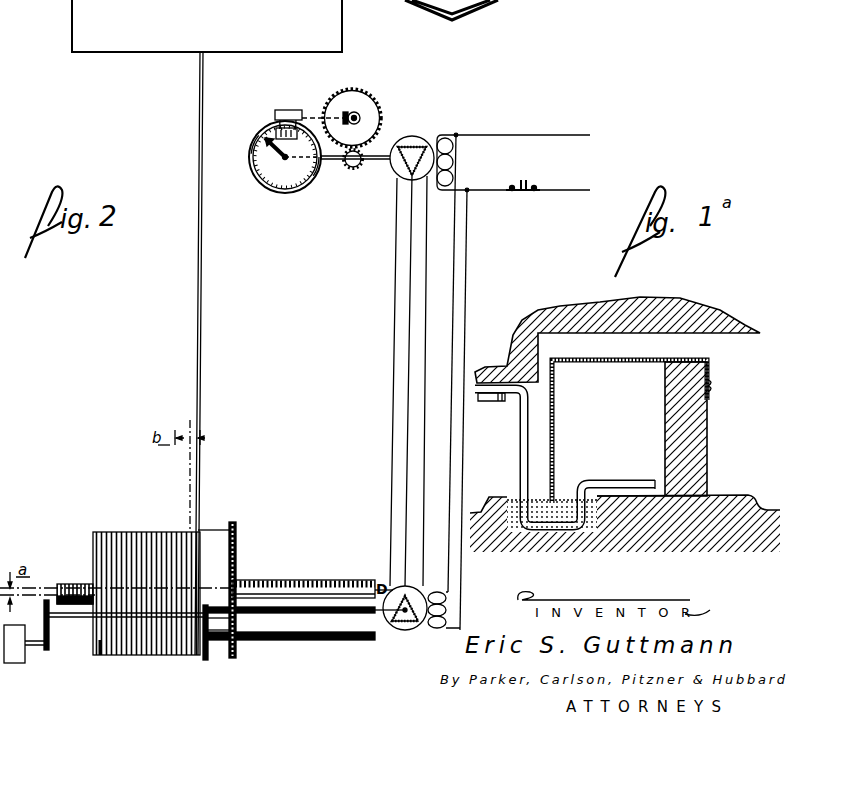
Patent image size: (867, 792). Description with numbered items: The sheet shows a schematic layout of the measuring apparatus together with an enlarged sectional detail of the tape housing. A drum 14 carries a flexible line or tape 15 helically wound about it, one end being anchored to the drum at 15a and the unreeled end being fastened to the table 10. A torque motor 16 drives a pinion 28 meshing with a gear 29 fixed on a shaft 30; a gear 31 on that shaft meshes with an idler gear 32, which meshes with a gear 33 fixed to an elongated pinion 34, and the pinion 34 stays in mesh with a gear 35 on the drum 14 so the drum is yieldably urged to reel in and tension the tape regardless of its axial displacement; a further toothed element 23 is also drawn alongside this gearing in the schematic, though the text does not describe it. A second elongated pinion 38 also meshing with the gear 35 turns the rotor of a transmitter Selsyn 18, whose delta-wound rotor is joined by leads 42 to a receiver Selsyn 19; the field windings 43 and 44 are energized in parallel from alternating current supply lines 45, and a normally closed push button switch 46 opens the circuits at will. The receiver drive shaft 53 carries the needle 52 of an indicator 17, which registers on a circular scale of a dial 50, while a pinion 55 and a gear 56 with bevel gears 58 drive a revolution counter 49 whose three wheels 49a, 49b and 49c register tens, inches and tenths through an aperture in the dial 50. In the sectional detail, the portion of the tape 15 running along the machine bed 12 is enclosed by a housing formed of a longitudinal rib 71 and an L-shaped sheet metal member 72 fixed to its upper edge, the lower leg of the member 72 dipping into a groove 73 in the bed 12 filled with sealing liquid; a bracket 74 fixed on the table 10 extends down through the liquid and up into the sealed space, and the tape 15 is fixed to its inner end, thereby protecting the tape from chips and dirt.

In FIG. 2, the table 10 is at (72, 5).
In FIG. 1A, the table 10 is at (590, 304).
In FIG. 1A, the machine bed 12 is at (725, 506).
In FIG. 2, the drum 14 is at (93, 534).
In FIG. 2, the flexible line 15 is at (203, 300).
In FIG. 1A, the flexible line 15 is at (640, 498).
In FIG. 2, the anchored end of line 15a is at (102, 652).
In FIG. 2, the torque motor 16 is at (16, 665).
In FIG. 2, the indicator 17 is at (282, 196).
In FIG. 2, the transmitter Selsyn 18 is at (408, 640).
In FIG. 2, the receiver Selsyn 19 is at (438, 132).
In FIG. 2, the rack 23 is at (304, 580).
In FIG. 2, the pinion 28 is at (49, 650).
In FIG. 2, the gear 29 is at (44, 607).
In FIG. 2, the shaft 30 is at (78, 617).
In FIG. 2, the gear 31 is at (206, 604).
In FIG. 2, the idler gear 32 is at (220, 625).
In FIG. 2, the gear 33 is at (204, 650).
In FIG. 2, the elongated pinion 34 is at (266, 643).
In FIG. 2, the gear 35 is at (238, 536).
In FIG. 2, the second elongated pinion 38 is at (330, 615).
In FIG. 2, the leads 42 is at (424, 276).
In FIG. 2, the field winding 43 is at (438, 632).
In FIG. 2, the field winding 44 is at (453, 162).
In FIG. 2, the supply lines 45 is at (590, 135).
In FIG. 2, the push button switch 46 is at (528, 194).
In FIG. 2, the revolution counter 49 is at (274, 112).
In FIG. 2, the counter wheel 49a is at (280, 118).
In FIG. 2, the counter wheel 49b is at (288, 128).
In FIG. 2, the counter wheel 49c is at (297, 128).
In FIG. 2, the dial 50 is at (254, 175).
In FIG. 2, the needle 52 is at (262, 140).
In FIG. 2, the drive shaft 53 is at (386, 166).
In FIG. 2, the pinion 55 is at (356, 170).
In FIG. 2, the gear 56 is at (382, 114).
In FIG. 2, the bevel gears 58 is at (360, 110).
In FIG. 1A, the longitudinal rib 71 is at (700, 421).
In FIG. 1A, the sheet metal member 72 is at (596, 356).
In FIG. 1A, the groove 73 is at (578, 526).
In FIG. 1A, the bracket 74 is at (520, 446).